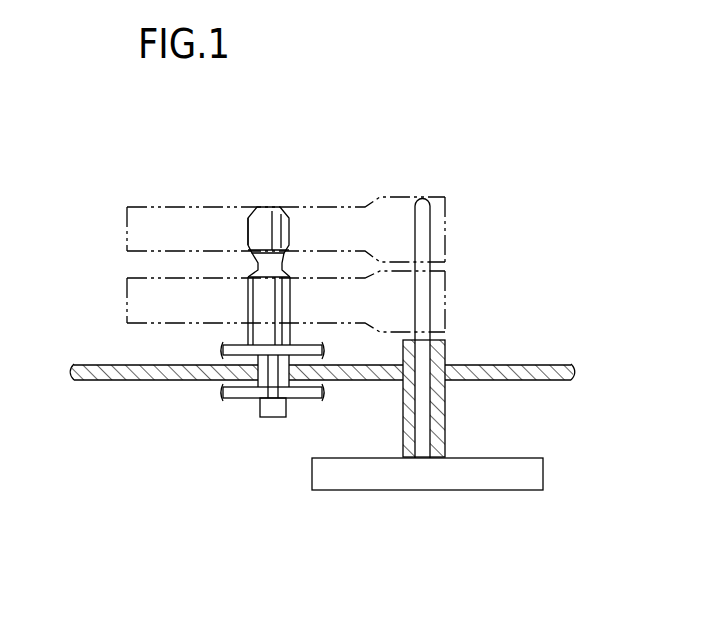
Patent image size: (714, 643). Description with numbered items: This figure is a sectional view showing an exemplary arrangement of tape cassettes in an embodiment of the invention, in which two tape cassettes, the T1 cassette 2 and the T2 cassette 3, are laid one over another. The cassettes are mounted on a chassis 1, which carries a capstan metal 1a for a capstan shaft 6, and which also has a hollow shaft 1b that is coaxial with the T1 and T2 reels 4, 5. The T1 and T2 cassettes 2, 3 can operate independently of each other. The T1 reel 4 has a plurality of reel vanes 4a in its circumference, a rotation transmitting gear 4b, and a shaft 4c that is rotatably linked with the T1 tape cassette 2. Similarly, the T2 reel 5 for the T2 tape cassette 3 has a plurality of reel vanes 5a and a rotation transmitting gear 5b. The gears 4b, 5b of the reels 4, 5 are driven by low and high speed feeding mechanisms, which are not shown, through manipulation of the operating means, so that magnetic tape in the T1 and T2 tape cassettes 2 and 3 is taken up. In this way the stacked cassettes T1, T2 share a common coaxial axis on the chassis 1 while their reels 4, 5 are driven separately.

The chassis 1 is at (114, 381).
The capstan metal 1a is at (431, 418).
The hollow shaft 1b is at (284, 382).
The T1 cassette 2 is at (126, 232).
The T2 cassette 3 is at (126, 296).
The T1 reel 4 is at (264, 208).
The reel vanes 4a is at (247, 236).
The rotation transmitting gear 4b is at (233, 402).
The shaft 4c is at (275, 418).
The T2 reel 5 is at (257, 305).
The reel vanes 5a is at (281, 304).
The rotation transmitting gear 5b is at (225, 350).
The capstan shaft 6 is at (422, 204).
The T1 tape cassette T1 is at (447, 247).
The T2 tape cassette T2 is at (447, 311).